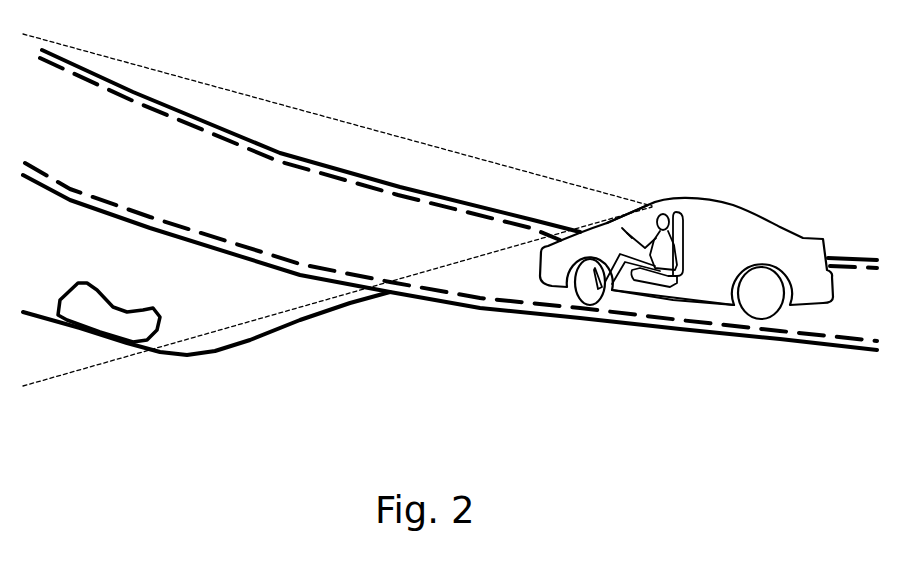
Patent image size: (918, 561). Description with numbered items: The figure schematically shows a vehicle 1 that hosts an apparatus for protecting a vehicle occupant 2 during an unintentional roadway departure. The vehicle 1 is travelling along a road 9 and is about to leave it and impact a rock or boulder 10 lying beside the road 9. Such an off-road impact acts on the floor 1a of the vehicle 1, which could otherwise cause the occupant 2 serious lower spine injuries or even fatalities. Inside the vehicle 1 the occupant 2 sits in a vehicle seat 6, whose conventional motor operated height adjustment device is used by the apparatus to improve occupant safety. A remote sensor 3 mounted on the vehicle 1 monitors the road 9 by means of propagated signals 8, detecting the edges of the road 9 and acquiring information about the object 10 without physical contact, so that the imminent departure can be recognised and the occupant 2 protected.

The vehicle 1 is at (694, 261).
The floor 1a is at (677, 303).
The vehicle occupant 2 is at (668, 213).
The remote sensor 3 is at (648, 208).
The vehicle seat 6 is at (676, 272).
The propagated signals 8 is at (377, 130).
The road 9 is at (178, 165).
The object (rock or boulder) 10 is at (98, 313).